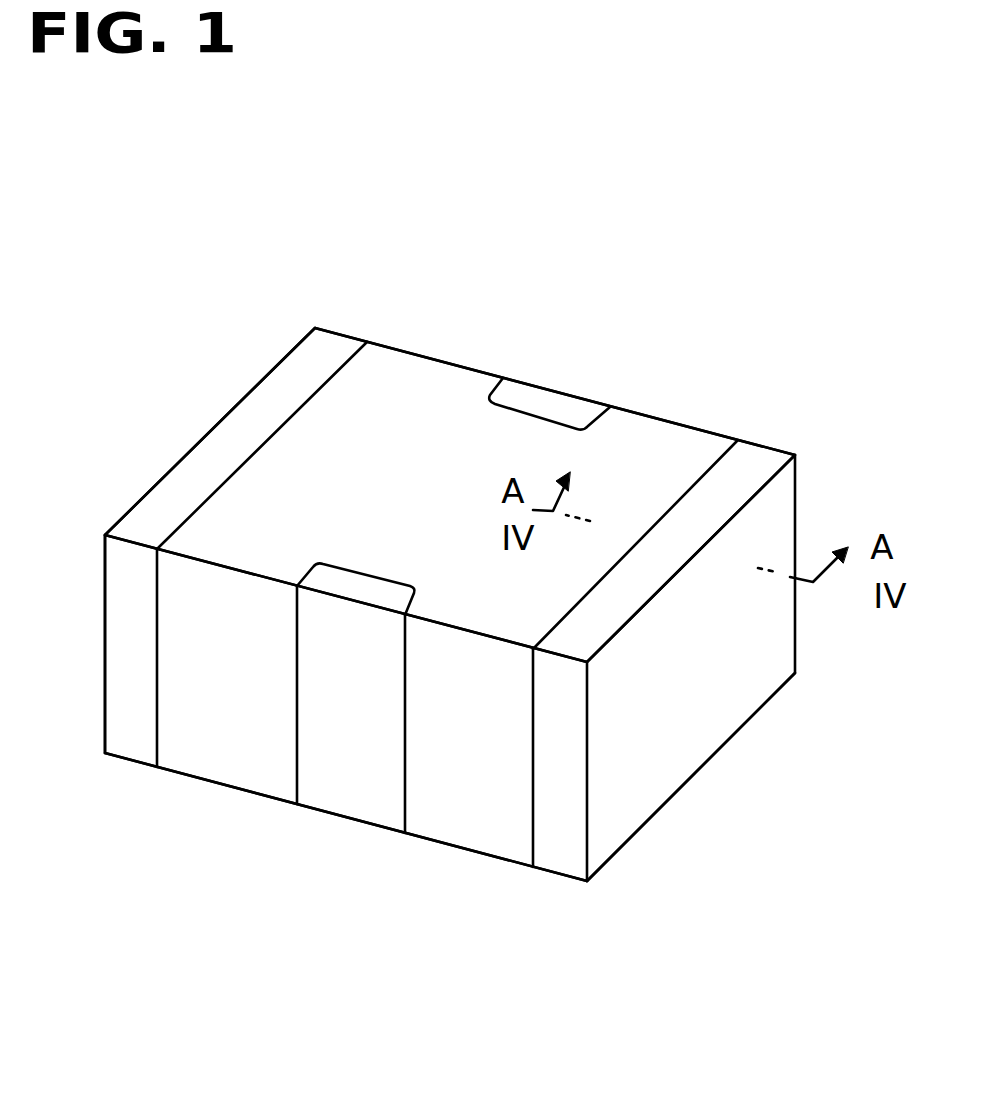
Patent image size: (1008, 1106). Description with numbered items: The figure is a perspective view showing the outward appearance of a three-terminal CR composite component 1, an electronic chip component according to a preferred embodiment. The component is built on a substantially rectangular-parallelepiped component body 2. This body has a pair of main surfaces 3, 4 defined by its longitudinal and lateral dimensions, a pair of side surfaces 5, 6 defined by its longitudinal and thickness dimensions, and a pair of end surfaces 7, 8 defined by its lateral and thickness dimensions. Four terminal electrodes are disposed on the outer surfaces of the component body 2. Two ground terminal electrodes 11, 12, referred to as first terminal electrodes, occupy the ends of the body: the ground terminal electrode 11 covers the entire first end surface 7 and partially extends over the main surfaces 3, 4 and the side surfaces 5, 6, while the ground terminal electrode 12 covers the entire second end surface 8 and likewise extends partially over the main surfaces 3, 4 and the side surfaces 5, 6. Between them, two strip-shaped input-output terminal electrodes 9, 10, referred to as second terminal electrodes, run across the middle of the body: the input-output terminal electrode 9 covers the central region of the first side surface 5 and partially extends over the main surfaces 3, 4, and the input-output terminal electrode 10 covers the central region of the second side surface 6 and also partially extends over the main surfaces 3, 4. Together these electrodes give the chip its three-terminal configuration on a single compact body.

The three-terminal CR composite component 1 is at (160, 152).
The component body 2 is at (415, 353).
The main surface 3 is at (632, 480).
The main surface 4 is at (492, 815).
The side surface 5 is at (222, 723).
The side surface 6 is at (450, 405).
The end surface 7 is at (705, 685).
The end surface 8 is at (223, 477).
The input-output terminal electrode 9 is at (350, 777).
The input-output terminal electrode 10 is at (568, 395).
The ground terminal electrode 11 is at (683, 783).
The ground terminal electrode 12 is at (143, 492).